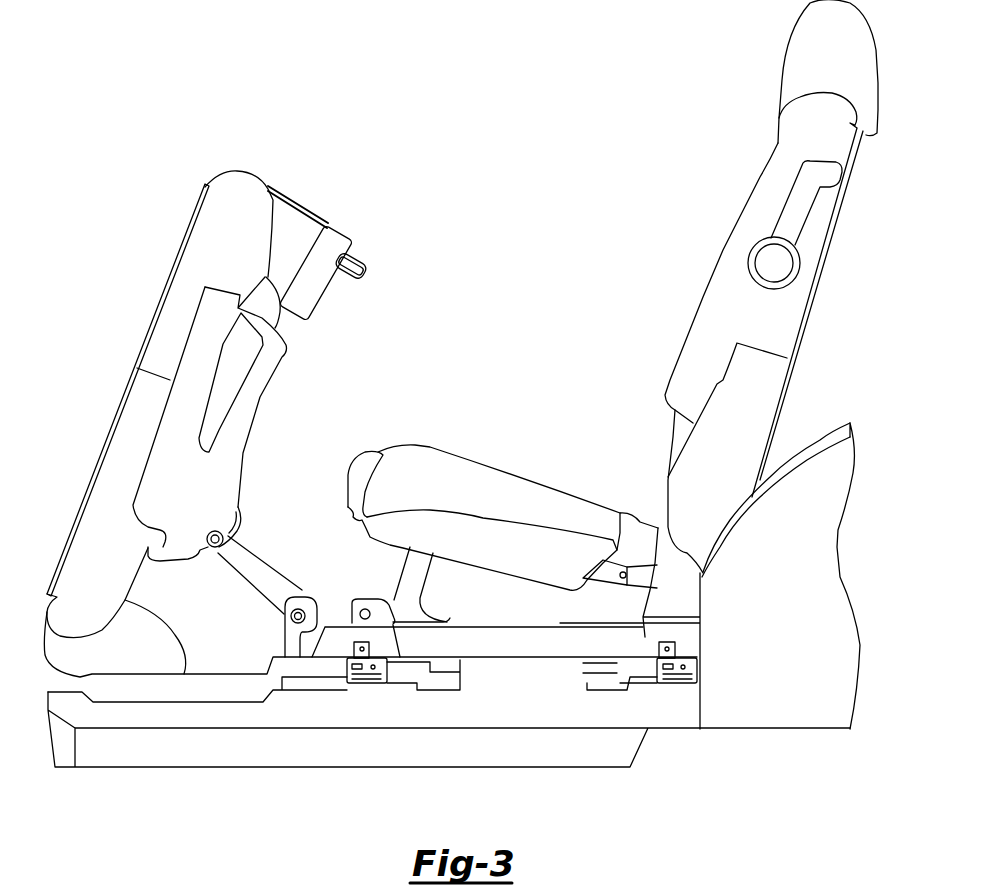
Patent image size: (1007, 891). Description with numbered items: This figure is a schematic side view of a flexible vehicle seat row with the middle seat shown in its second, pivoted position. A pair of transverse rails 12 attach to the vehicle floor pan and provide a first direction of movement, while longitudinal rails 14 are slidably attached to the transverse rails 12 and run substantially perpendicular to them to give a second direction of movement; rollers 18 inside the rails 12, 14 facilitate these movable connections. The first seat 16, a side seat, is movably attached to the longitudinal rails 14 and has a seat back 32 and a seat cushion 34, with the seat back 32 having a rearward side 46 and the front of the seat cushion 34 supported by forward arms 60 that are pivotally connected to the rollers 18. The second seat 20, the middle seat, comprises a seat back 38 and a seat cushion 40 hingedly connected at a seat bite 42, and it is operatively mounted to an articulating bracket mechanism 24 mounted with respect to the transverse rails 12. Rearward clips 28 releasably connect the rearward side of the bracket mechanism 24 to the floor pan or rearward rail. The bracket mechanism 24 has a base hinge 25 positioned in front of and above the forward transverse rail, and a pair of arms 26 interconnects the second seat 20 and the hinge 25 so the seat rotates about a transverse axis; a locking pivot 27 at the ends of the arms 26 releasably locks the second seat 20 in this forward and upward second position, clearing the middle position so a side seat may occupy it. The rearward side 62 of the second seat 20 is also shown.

The transverse rails 12 is at (366, 684).
The longitudinal rails 14 is at (503, 642).
The first seat 16 is at (655, 258).
The rollers 18 is at (352, 684).
The second seat 20 is at (143, 262).
The articulating bracket mechanism 24 is at (250, 528).
The base hinge 25 is at (314, 592).
The arms 26 is at (247, 560).
The locking pivot 27 is at (212, 558).
The rearward clips 28 is at (371, 266).
The seat back 32 is at (790, 307).
The seat cushion 34 is at (503, 480).
The seat back 38 is at (100, 527).
The seat cushion 40 is at (173, 420).
The seat bite 42 is at (278, 165).
The rearward side 46 is at (795, 362).
The forward arms 60 is at (418, 572).
The rearward side 62 is at (113, 420).